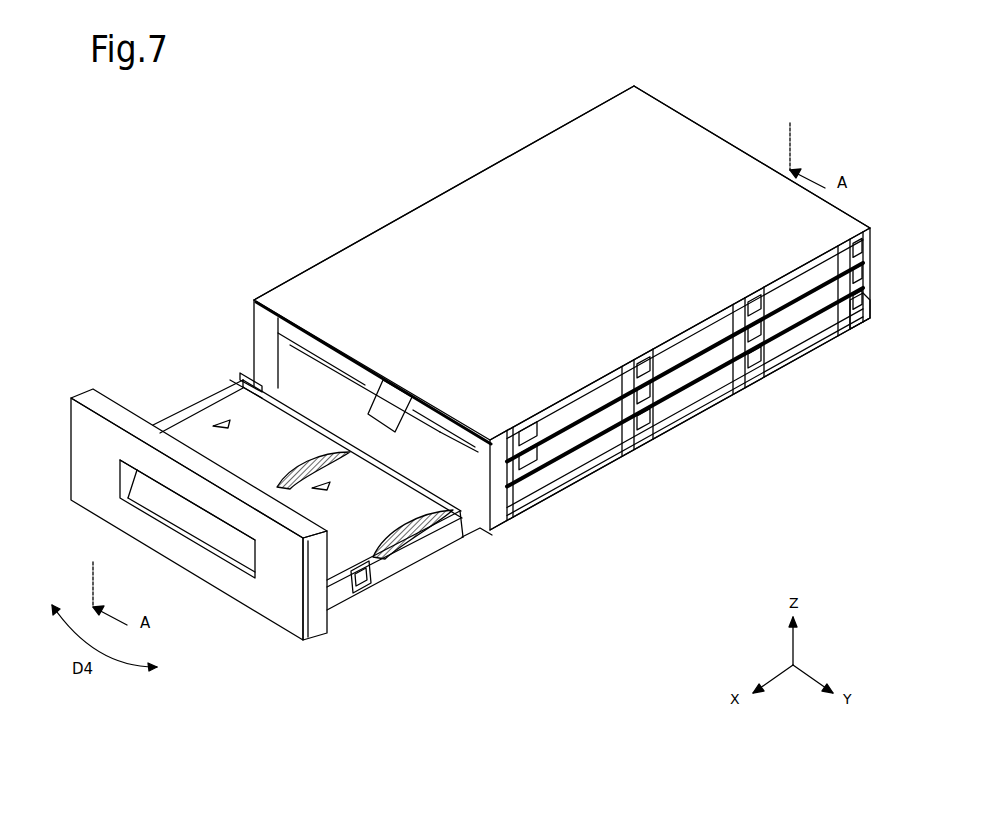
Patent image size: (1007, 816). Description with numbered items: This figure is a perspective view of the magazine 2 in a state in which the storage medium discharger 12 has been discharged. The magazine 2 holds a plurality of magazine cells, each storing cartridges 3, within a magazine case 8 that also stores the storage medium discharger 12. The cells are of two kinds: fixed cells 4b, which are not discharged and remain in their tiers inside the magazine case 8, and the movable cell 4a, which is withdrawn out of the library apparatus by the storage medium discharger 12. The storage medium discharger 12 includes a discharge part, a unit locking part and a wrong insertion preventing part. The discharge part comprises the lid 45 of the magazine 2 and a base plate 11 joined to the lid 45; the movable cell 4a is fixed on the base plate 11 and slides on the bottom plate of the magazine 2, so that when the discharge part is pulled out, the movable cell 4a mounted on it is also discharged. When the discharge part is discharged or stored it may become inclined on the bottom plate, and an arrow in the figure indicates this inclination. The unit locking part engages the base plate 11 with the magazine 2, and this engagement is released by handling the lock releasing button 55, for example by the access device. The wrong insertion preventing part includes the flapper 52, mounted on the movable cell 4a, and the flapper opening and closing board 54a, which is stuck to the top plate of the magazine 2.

The magazine 2 is at (436, 124).
The magazine case 8 is at (673, 125).
The storage medium discharger 12 is at (186, 390).
The flapper opening and closing board 54a is at (392, 380).
The fixed cell 4b is at (850, 253).
The lock releasing button 55 is at (870, 307).
The cartridge 3 is at (803, 330).
The movable cell 4a is at (460, 540).
The base plate 11 is at (480, 530).
The flapper 52 is at (340, 562).
The lid 45 is at (282, 615).